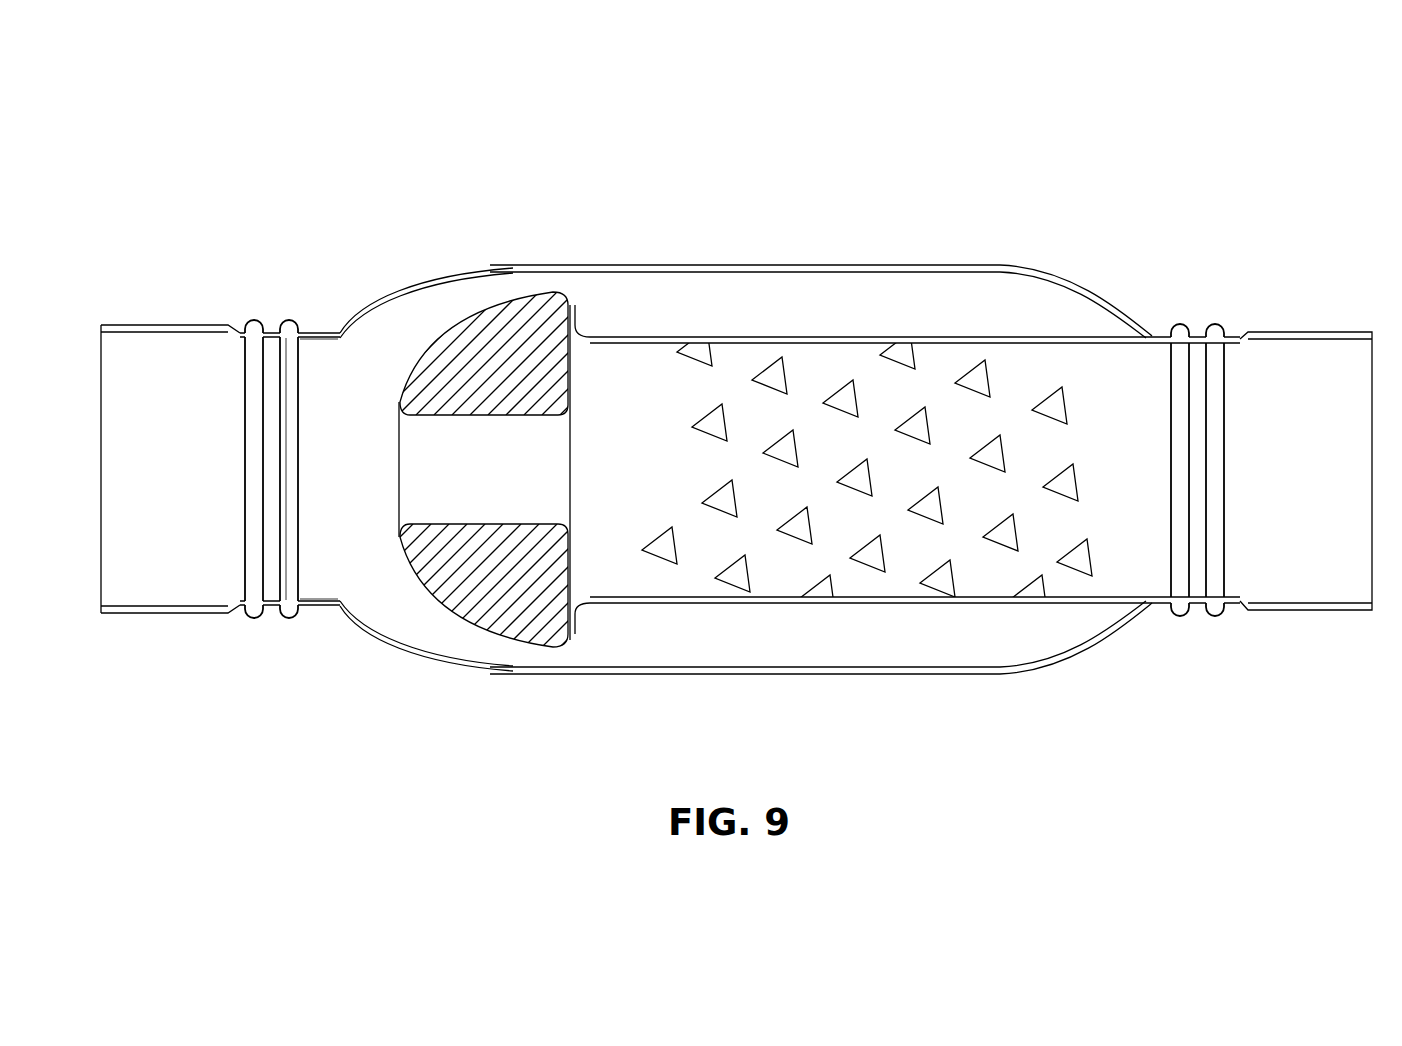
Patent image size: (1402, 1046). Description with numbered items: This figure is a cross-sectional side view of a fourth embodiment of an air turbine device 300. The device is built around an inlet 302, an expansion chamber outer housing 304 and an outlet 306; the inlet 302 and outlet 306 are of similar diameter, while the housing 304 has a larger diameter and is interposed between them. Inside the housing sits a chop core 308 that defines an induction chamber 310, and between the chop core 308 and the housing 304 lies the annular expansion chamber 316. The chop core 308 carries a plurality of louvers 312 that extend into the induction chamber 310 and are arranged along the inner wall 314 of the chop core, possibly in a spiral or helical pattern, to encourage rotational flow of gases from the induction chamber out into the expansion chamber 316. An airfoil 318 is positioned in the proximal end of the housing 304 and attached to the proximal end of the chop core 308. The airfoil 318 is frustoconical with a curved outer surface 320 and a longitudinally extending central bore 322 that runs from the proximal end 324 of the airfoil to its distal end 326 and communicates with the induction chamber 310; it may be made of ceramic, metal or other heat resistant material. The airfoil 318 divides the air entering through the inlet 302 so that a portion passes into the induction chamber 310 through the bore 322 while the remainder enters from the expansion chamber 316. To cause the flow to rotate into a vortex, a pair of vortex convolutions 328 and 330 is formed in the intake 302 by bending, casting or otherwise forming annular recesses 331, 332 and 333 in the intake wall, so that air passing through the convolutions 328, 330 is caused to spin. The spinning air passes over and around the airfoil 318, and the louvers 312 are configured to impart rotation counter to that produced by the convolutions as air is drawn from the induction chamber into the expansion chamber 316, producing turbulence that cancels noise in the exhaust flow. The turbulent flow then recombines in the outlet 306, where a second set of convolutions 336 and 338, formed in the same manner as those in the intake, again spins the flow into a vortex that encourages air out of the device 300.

The air turbine device 300 is at (895, 203).
The inlet 302 is at (163, 325).
The expansion chamber outer housing 304 is at (797, 676).
The outlet 306 is at (1303, 612).
The chop core 308 is at (882, 603).
The induction chamber 310 is at (627, 368).
The louvers 312 is at (982, 370).
The inner wall 314 is at (670, 580).
The annular expansion chamber 316 is at (733, 287).
The airfoil 318 is at (458, 330).
The curved outer surface 320 is at (360, 316).
The central bore 322 is at (588, 322).
The proximal end 324 is at (400, 402).
The distal end 326 is at (570, 383).
The vortex convolution 328 is at (253, 609).
The vortex convolution 330 is at (290, 612).
The annular recess 331 is at (237, 326).
The annular recess 332 is at (271, 327).
The annular recess 333 is at (311, 606).
The convolution 336 is at (1180, 612).
The convolution 338 is at (1216, 612).